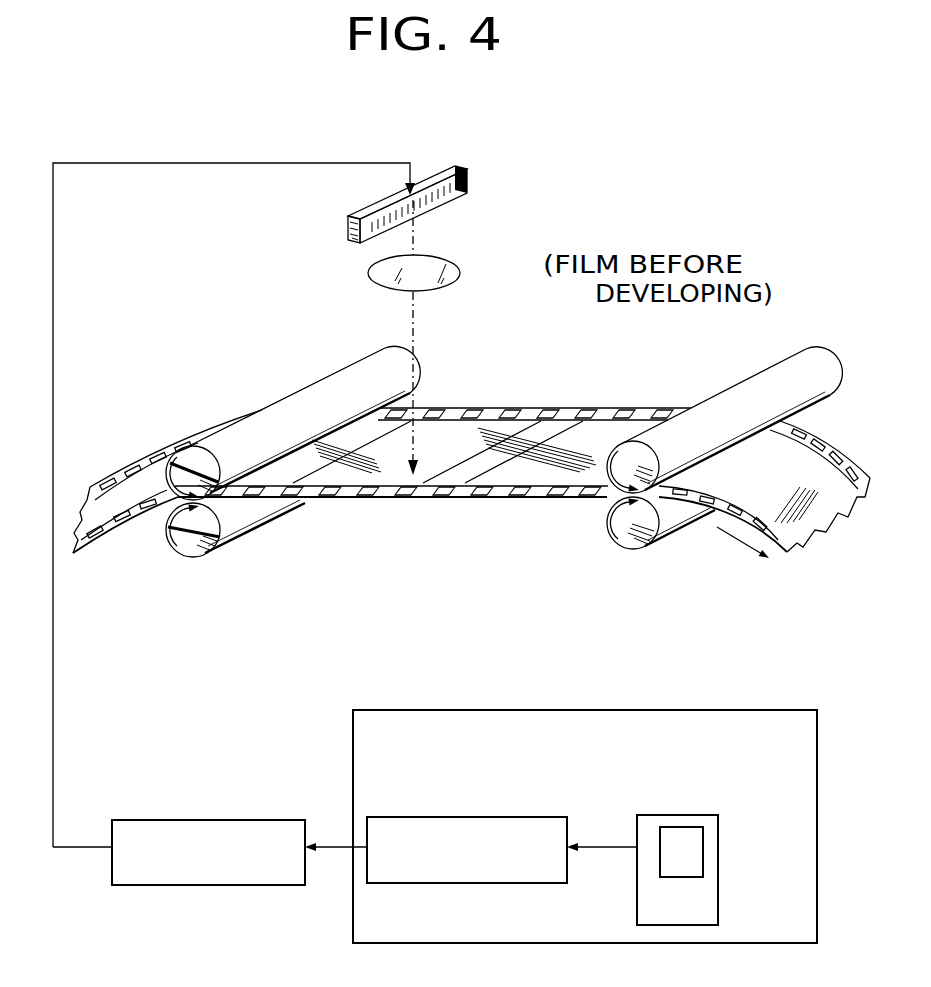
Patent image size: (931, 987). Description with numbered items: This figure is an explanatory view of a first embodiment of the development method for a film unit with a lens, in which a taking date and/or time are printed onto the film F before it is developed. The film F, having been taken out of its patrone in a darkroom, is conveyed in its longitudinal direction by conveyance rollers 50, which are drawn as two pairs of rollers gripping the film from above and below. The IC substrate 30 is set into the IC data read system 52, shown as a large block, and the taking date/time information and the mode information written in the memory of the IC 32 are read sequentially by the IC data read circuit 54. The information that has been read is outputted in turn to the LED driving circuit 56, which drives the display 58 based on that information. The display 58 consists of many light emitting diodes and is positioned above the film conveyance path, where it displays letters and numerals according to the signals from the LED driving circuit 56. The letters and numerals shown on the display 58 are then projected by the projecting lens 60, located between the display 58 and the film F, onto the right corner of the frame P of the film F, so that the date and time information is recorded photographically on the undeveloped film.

The display 58 is at (472, 180).
The projecting lens 60 is at (443, 268).
The conveyance rollers 50 is at (300, 408).
The IC data read system 52 is at (580, 710).
The IC data read circuit 54 is at (428, 817).
The LED driving circuit 56 is at (190, 820).
The IC substrate 30 is at (700, 808).
The IC 32 is at (703, 848).
The film F is at (522, 400).
The frame P is at (457, 440).